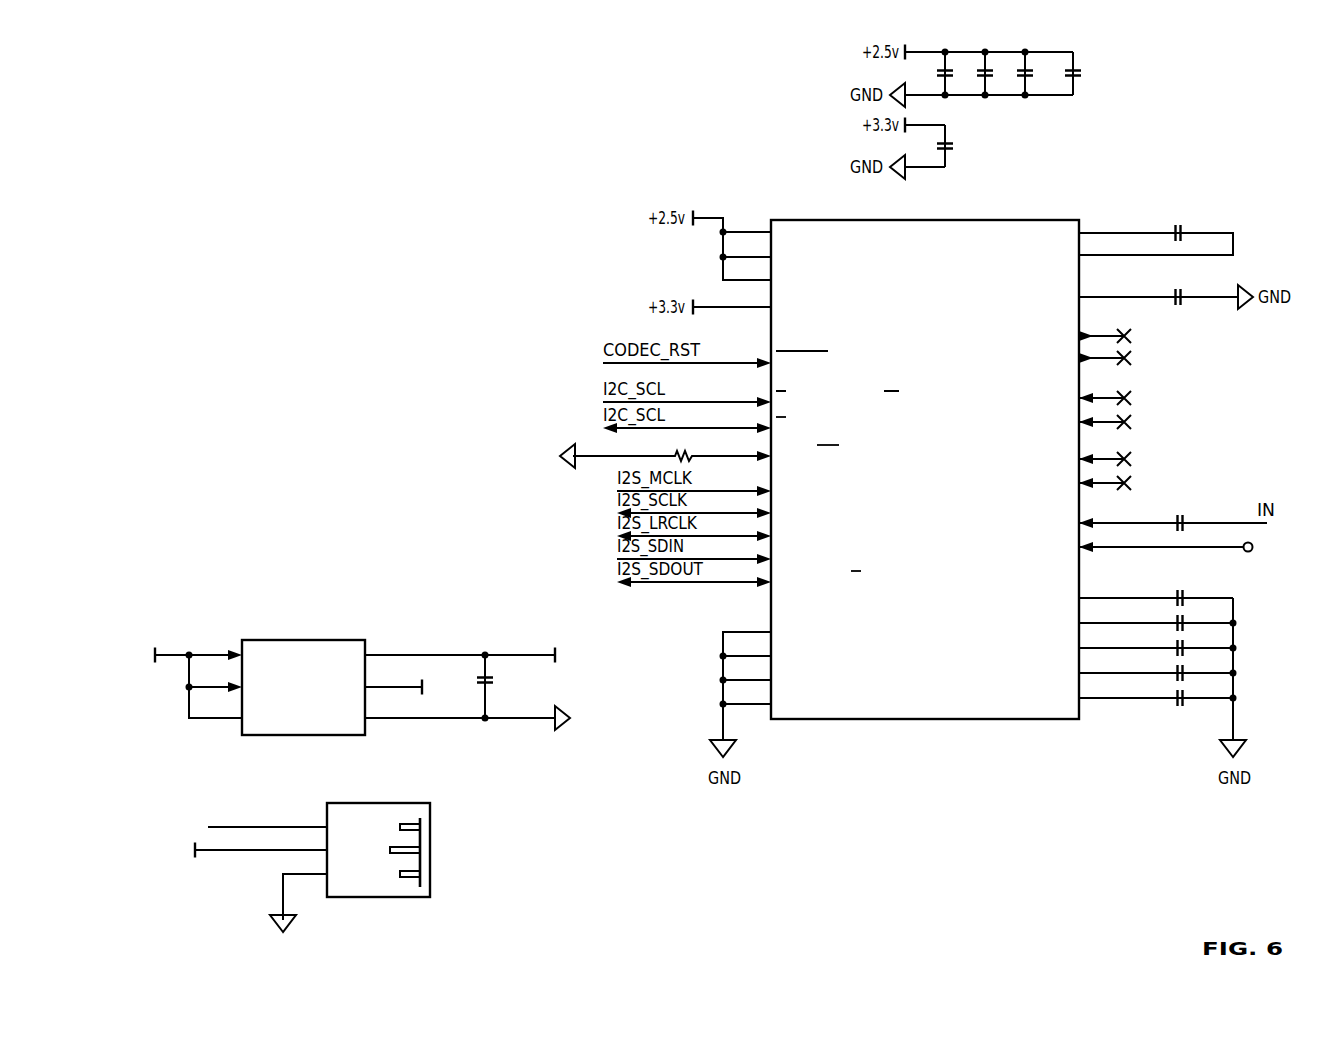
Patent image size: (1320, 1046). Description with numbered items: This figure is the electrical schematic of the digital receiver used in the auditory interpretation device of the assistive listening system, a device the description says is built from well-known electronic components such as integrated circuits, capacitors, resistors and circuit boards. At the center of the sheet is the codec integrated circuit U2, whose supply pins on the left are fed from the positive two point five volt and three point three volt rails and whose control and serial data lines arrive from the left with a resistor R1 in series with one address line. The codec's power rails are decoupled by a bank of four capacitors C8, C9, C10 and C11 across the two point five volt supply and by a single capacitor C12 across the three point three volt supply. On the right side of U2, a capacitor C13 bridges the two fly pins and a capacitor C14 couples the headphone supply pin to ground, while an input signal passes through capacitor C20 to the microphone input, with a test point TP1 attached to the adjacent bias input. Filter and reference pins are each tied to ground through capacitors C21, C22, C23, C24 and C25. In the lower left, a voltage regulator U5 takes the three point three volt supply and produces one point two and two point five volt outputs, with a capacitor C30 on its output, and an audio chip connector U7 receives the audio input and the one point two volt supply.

The audio codec CS42L51 U2 is at (920, 447).
The voltage regulator TLV7111225DSER U5 is at (361, 663).
The audio chip connector U7 is at (291, 858).
The resistor R1 is at (645, 450).
The capacitor C8 is at (957, 74).
The capacitor C9 is at (997, 74).
The capacitor C10 is at (1041, 74).
The capacitor C11 is at (1089, 73).
The capacitor C12 is at (961, 146).
The capacitor C13 is at (1156, 231).
The capacitor C14 is at (1158, 304).
The capacitor C20 is at (1173, 531).
The capacitor C21 is at (1156, 605).
The capacitor C22 is at (1158, 630).
The capacitor C23 is at (1158, 655).
The capacitor C24 is at (1158, 680).
The capacitor C25 is at (1158, 705).
The capacitor C30 is at (501, 687).
The test point TP1 is at (1170, 560).